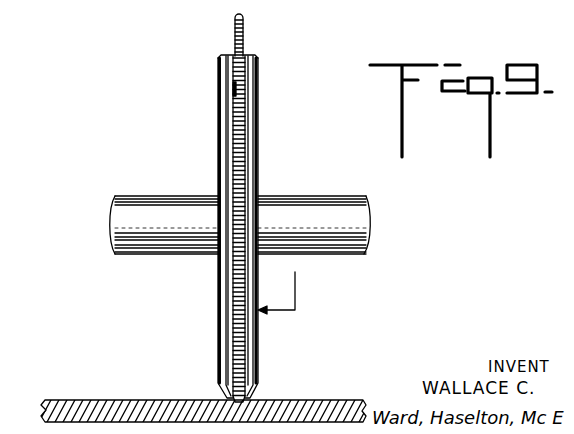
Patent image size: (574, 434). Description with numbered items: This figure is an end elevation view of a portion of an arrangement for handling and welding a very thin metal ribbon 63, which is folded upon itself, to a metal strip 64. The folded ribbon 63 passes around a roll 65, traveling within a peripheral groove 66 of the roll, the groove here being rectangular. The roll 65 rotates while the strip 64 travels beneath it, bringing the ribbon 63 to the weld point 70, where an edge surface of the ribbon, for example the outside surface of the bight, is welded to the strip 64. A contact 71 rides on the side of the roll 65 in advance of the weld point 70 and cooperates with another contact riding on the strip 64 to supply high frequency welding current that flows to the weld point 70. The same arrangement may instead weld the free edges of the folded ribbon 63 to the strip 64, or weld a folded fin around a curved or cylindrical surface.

The metal ribbon 63 is at (243, 42).
The metal strip 64 is at (132, 400).
The roll 65 is at (258, 172).
The peripheral groove 66 is at (236, 355).
The weld point 70 is at (248, 400).
The contact 71 is at (262, 311).